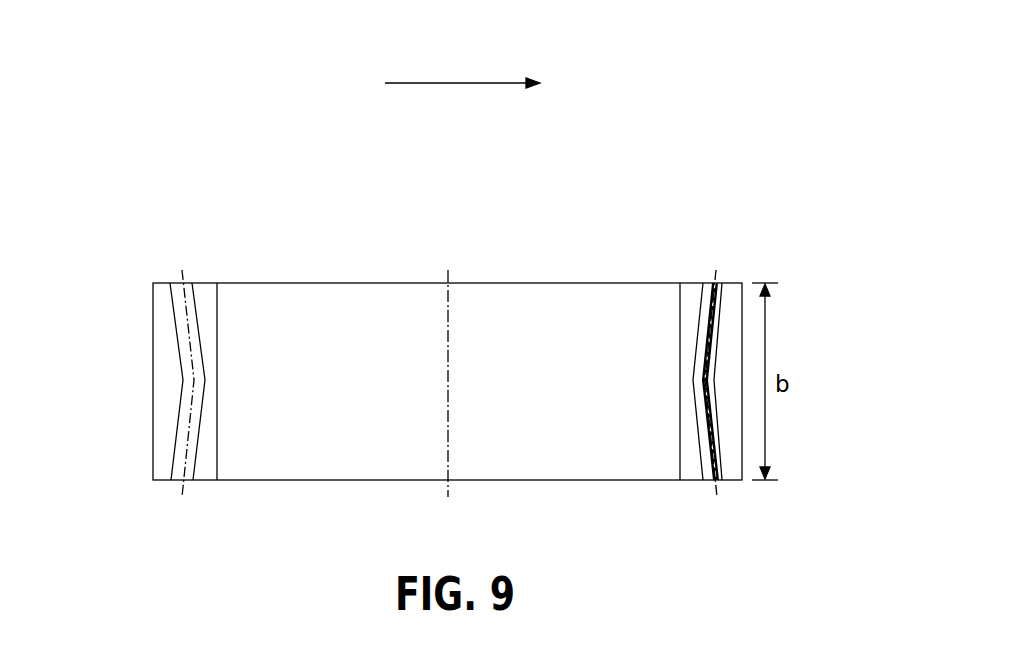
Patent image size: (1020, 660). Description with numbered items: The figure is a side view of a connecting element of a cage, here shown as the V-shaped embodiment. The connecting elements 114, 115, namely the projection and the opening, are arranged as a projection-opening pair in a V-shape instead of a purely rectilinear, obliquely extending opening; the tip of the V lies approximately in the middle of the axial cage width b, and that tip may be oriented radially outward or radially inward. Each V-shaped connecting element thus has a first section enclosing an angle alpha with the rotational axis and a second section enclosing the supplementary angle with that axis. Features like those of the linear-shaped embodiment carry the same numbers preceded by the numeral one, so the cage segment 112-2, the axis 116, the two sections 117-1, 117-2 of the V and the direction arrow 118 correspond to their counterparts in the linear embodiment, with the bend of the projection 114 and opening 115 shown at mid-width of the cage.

The sensor assembly / component 112-2 is at (692, 90).
The connecting element (projection) 114 is at (720, 463).
The connecting element (opening) 115 is at (183, 463).
The central axis 116 is at (449, 325).
The first bending line 117-1 is at (716, 283).
The second bending line 117-2 is at (181, 283).
The direction arrow 118 is at (460, 83).